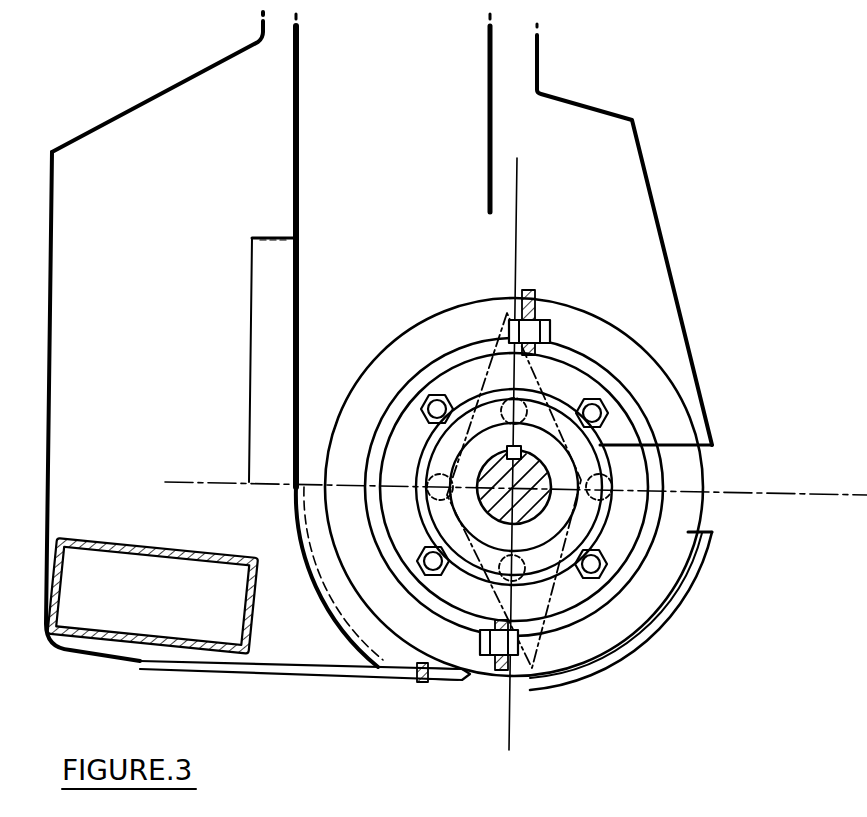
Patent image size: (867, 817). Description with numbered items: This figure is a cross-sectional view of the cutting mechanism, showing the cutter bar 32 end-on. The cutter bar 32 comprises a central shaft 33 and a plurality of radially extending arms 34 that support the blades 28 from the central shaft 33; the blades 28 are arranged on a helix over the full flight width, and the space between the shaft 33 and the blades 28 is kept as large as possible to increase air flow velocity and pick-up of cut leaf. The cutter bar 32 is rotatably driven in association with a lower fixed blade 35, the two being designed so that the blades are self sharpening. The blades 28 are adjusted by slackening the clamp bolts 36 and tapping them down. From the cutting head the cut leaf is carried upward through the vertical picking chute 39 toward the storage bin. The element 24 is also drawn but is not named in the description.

The mounting plate 24 is at (305, 674).
The blades 28 is at (538, 513).
The cutter bar 32 is at (518, 491).
The central shaft 33 is at (586, 480).
The radially extending arms 34 is at (590, 492).
The lower fixed blade 35 is at (418, 716).
The clamp bolts 36 is at (559, 529).
The vertical picking chute 39 is at (422, 157).